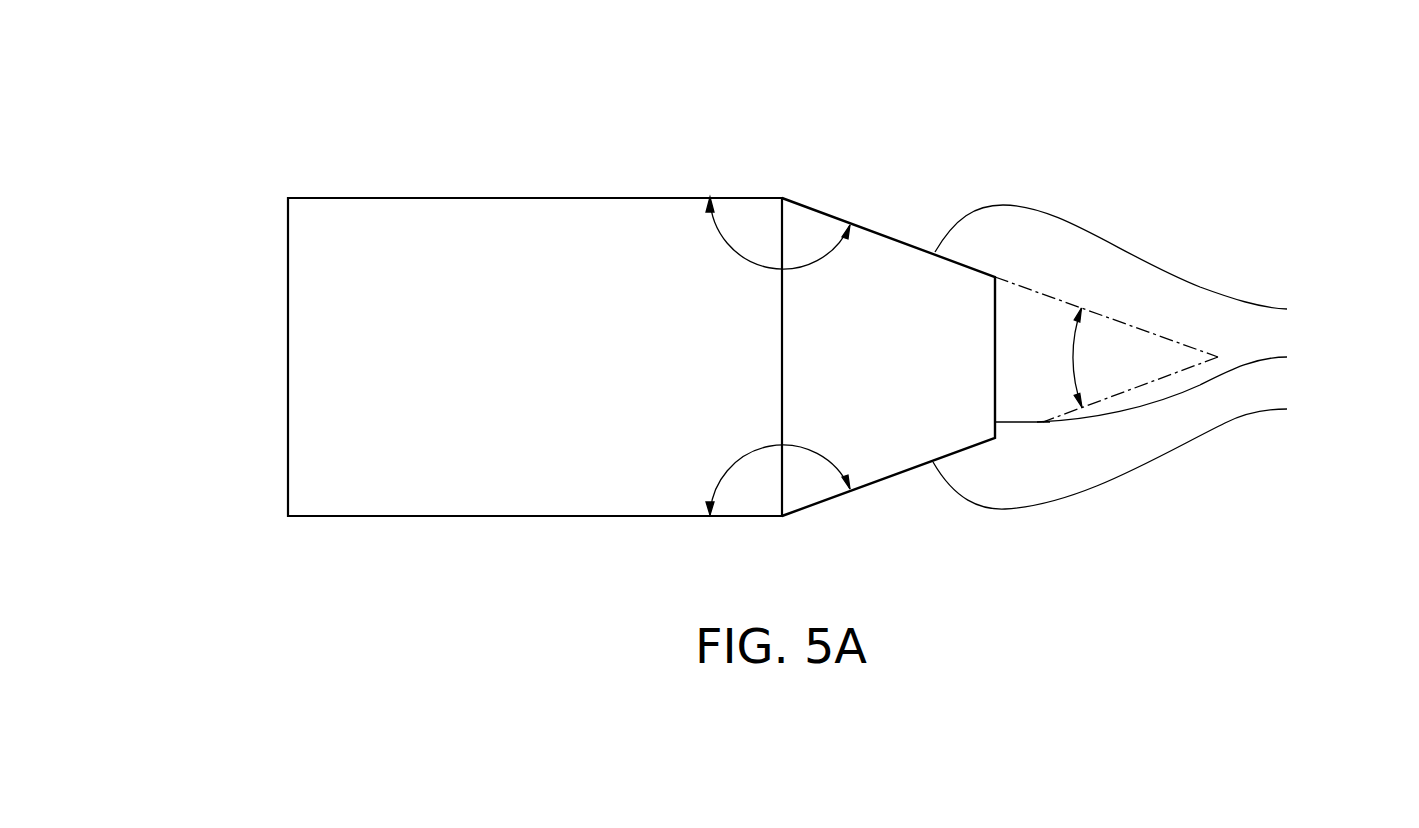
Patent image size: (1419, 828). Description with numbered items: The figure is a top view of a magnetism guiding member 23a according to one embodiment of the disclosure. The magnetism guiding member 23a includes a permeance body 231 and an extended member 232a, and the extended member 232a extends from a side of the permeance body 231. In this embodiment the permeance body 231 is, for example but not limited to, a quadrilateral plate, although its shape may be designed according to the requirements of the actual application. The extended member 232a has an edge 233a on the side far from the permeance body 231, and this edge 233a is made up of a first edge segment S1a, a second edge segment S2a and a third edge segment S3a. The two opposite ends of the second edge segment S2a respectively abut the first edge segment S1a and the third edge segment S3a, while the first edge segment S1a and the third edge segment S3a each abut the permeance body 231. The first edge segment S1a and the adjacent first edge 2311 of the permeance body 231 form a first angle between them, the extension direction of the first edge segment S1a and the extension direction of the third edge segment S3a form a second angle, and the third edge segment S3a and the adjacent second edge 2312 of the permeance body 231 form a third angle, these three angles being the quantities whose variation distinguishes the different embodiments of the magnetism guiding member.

The magnetism guiding member 23a is at (791, 338).
The permeance body 231 is at (535, 369).
The first edge 2311 is at (560, 198).
The second edge 2312 is at (560, 517).
The extended member 232a is at (888, 447).
The edge 233a is at (1167, 357).
The first edge segment S1a is at (1132, 264).
The second edge segment S2a is at (1183, 383).
The third edge segment S3a is at (1131, 452).